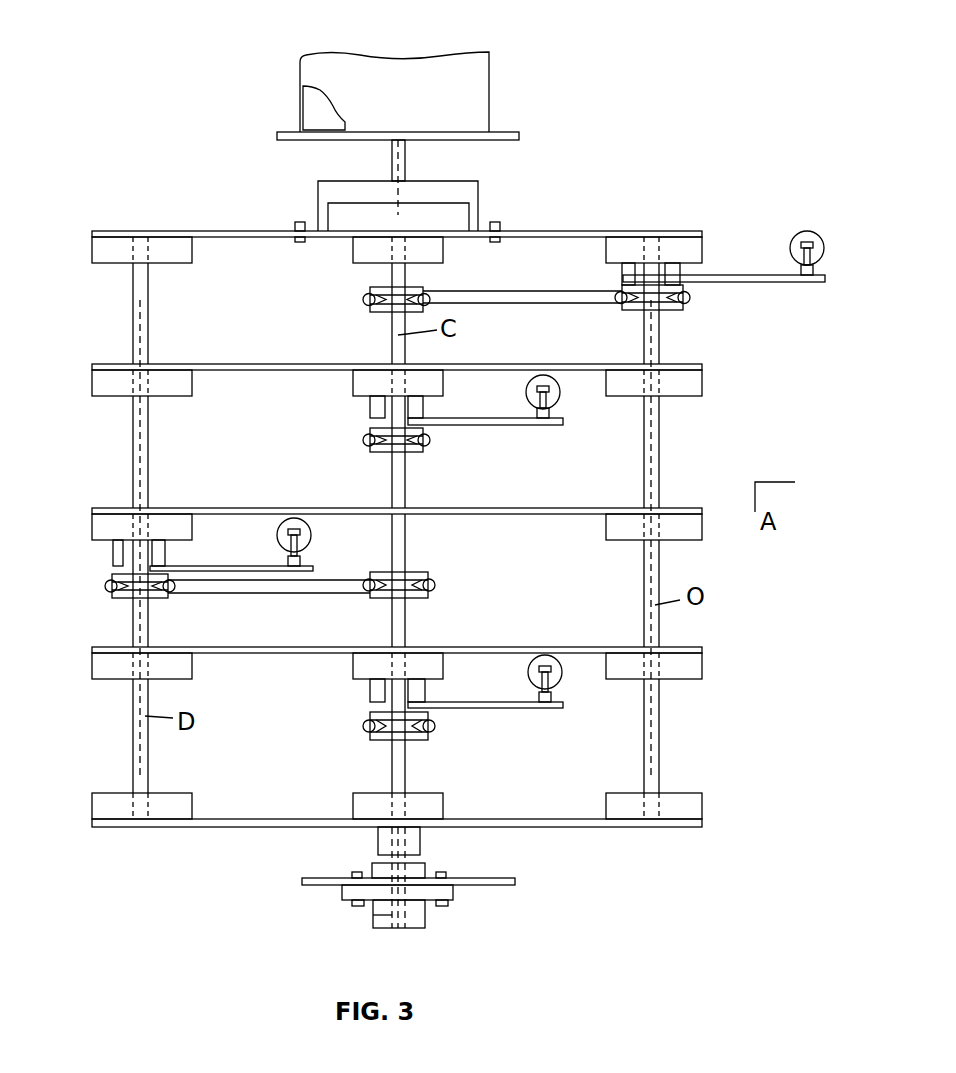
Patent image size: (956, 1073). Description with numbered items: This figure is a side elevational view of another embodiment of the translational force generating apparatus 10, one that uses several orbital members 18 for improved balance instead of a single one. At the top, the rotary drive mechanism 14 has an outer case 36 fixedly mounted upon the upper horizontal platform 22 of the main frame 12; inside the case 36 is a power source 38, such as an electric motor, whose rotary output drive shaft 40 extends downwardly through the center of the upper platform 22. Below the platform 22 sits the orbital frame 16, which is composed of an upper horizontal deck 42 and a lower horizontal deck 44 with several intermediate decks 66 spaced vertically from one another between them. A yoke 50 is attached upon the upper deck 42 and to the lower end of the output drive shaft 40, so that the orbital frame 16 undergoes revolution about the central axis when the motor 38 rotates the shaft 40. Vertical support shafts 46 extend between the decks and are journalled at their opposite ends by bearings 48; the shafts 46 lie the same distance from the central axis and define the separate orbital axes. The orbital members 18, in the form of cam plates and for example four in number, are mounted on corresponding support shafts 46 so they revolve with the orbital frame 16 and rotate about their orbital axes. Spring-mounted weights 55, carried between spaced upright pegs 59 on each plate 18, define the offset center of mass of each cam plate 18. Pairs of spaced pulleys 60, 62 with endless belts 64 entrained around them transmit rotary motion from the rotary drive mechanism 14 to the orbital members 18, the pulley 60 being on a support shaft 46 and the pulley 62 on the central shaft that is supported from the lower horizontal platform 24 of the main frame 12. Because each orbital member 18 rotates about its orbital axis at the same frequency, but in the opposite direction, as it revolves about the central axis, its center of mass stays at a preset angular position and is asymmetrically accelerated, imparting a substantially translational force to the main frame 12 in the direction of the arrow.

The translational force generating apparatus 10 is at (655, 102).
The main frame 12 is at (272, 122).
The rotary drive mechanism 14 is at (516, 80).
The orbital frame 16 is at (640, 218).
The orbital member 18 is at (742, 262).
The upper horizontal platform 22 is at (520, 137).
The lower horizontal platform 24 is at (318, 887).
The outer case 36 is at (372, 55).
The power source 38 is at (322, 112).
The rotary output drive shaft 40 is at (405, 165).
The upper horizontal deck 42 is at (235, 231).
The lower horizontal deck 44 is at (247, 828).
The support shafts 46 is at (133, 462).
The bearings 48 is at (112, 262).
The yoke 50 is at (478, 196).
The weights 55 is at (814, 224).
The pegs 59 is at (810, 282).
The pulley 60 is at (637, 312).
The pulley 62 is at (378, 312).
The endless belt 64 is at (490, 290).
The intermediate decks 66 is at (212, 364).